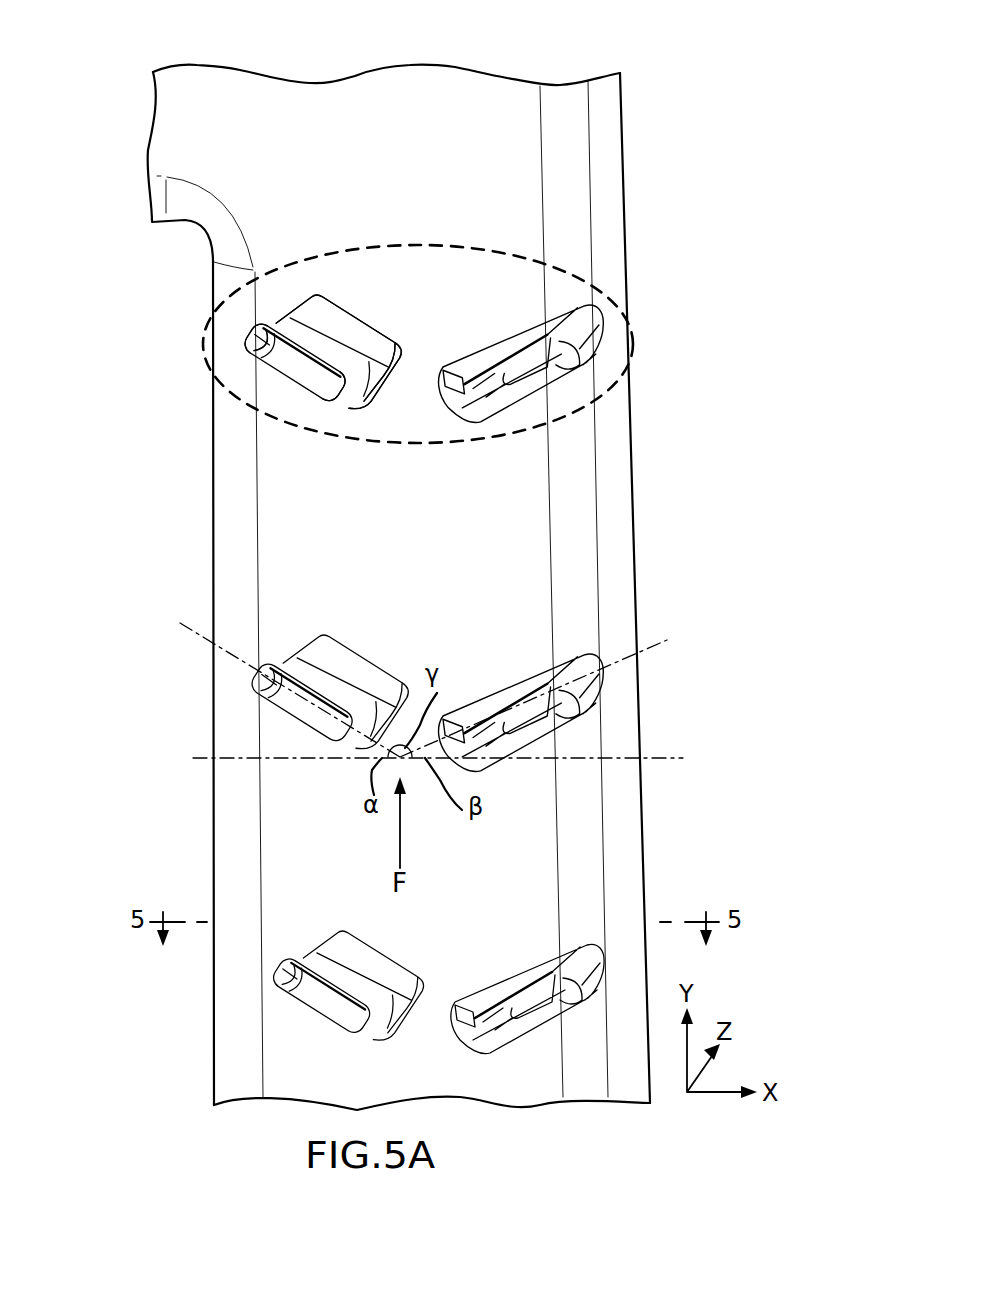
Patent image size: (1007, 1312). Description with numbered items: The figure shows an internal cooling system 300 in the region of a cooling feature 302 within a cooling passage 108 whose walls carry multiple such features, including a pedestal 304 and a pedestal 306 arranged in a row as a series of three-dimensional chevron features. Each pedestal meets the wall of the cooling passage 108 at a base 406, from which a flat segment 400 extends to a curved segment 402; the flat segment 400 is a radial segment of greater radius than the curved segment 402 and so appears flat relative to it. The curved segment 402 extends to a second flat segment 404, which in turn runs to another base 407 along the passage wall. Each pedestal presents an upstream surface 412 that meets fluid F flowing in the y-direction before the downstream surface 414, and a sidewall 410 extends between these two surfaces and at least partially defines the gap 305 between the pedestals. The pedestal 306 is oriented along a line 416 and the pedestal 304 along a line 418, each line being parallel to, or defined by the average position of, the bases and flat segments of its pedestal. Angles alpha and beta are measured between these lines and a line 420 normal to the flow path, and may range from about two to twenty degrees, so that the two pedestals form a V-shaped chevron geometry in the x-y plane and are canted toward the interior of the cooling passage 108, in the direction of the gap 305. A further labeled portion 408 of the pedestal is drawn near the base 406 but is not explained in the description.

The carrier strip assembly 300 is at (120, 80).
The carrier strip 108 is at (500, 100).
The row of inserts 302 is at (628, 330).
The second insert 304 is at (598, 312).
The slot of second insert 305 is at (432, 360).
The first insert 306 is at (330, 320).
The flange end 400 is at (352, 397).
The body lower edge 402 is at (372, 385).
The body end face 404 is at (415, 373).
The flange 406 is at (305, 380).
The insert body 407 is at (357, 320).
The flange rounded end 408 is at (250, 340).
The body top edge 410 is at (377, 320).
The slot edge 412 is at (326, 395).
The body side wall 414 is at (310, 317).
The first insert axis line 416 is at (190, 628).
The second insert axis line 418 is at (665, 643).
The horizontal reference line 420 is at (673, 760).